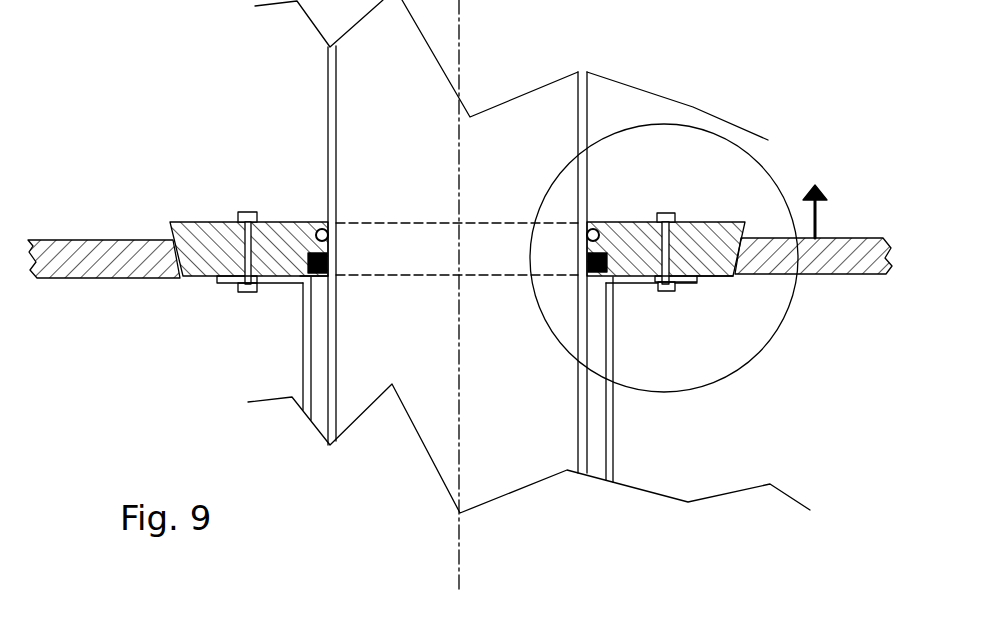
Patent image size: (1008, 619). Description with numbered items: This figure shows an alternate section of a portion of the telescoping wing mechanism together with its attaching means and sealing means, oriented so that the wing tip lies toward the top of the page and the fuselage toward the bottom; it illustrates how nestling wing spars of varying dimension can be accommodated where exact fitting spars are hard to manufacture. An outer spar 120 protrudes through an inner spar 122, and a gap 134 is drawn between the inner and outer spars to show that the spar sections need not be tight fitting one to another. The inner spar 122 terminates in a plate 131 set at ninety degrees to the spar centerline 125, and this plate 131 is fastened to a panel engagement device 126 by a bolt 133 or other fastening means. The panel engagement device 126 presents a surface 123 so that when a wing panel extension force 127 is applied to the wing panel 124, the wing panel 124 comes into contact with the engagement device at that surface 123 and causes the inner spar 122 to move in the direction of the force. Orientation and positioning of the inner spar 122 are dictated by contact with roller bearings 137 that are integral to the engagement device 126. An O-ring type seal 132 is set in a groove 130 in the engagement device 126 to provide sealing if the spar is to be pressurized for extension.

The outer spar 120 is at (337, 122).
The inner spar 122 is at (303, 325).
The surface 123 is at (745, 228).
The wing panel 124 is at (67, 280).
The spar centerline 125 is at (458, 565).
The panel engagement device 126 is at (713, 277).
The wing panel extension force 127 is at (815, 210).
The groove 130 is at (603, 240).
The plate 131 is at (683, 287).
The O-ring type seal 132 is at (598, 232).
The bolt 133 is at (658, 290).
The gap 134 is at (597, 348).
The roller bearings 137 is at (330, 278).